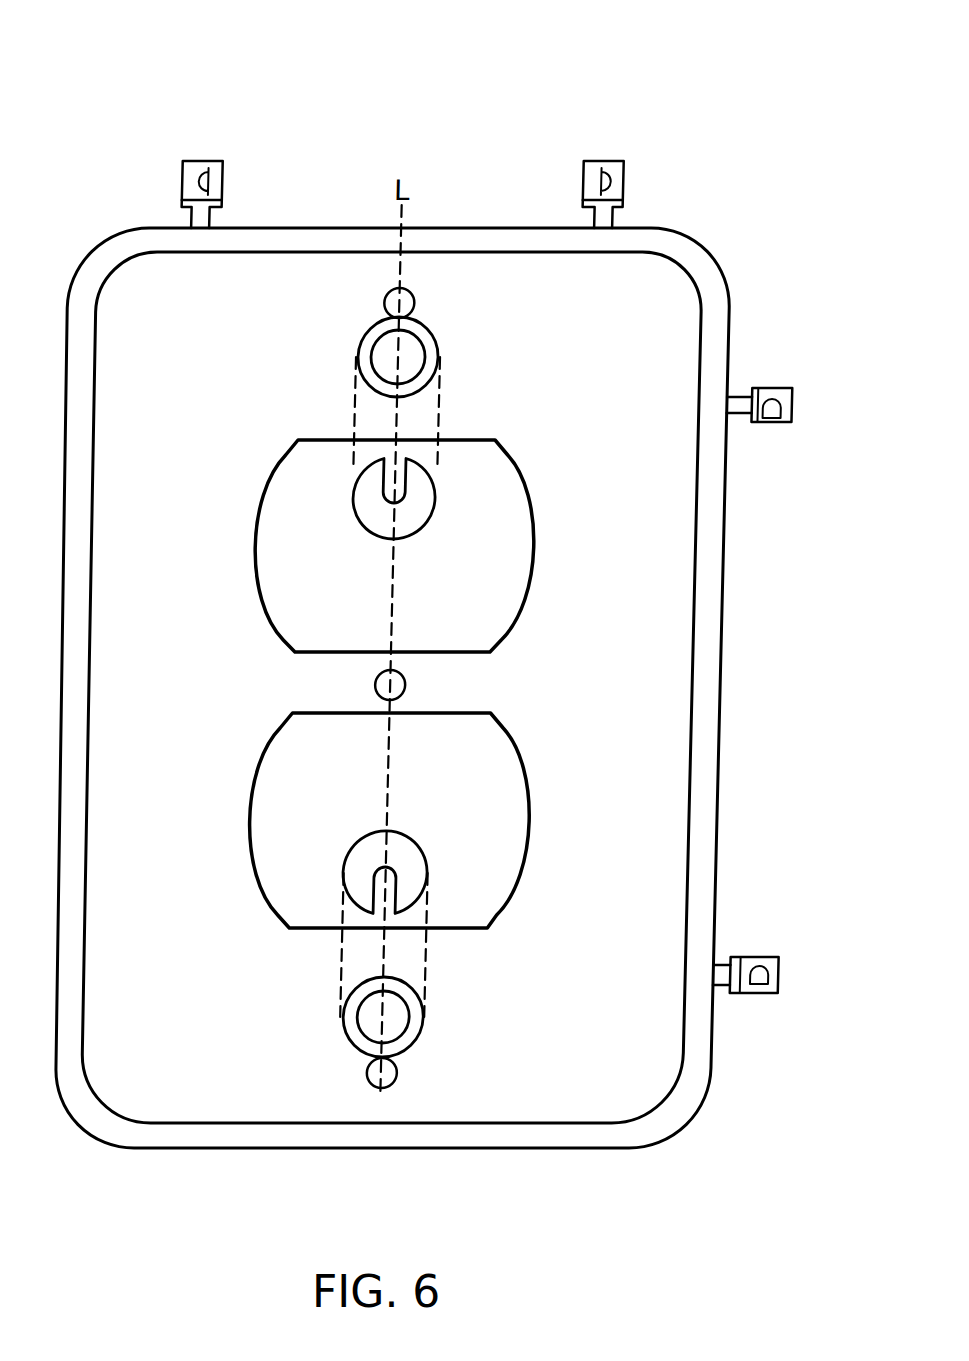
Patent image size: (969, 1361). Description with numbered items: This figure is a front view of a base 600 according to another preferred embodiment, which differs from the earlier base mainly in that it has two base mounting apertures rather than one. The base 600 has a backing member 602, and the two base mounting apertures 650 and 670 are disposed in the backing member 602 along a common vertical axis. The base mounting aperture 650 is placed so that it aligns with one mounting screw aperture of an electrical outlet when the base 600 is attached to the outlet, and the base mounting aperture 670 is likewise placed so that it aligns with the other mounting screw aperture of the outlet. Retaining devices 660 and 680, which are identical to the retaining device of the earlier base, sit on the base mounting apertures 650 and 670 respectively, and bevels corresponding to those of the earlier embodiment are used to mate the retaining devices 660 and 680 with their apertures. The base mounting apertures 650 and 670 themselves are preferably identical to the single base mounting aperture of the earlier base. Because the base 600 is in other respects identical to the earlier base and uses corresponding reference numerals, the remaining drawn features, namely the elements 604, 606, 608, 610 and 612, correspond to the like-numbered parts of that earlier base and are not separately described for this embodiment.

The base 600 is at (349, 100).
The backing member 602 is at (640, 338).
The outer frame 604 is at (669, 252).
The top mounting tab 606 is at (208, 178).
The side mounting tab 608 is at (774, 400).
The upper spring housing 610 is at (372, 604).
The lower spring housing 612 is at (376, 777).
The base mounting aperture 650 is at (383, 1020).
The retaining device 660 is at (380, 880).
The base mounting aperture 670 is at (378, 355).
The retaining device 680 is at (373, 482).